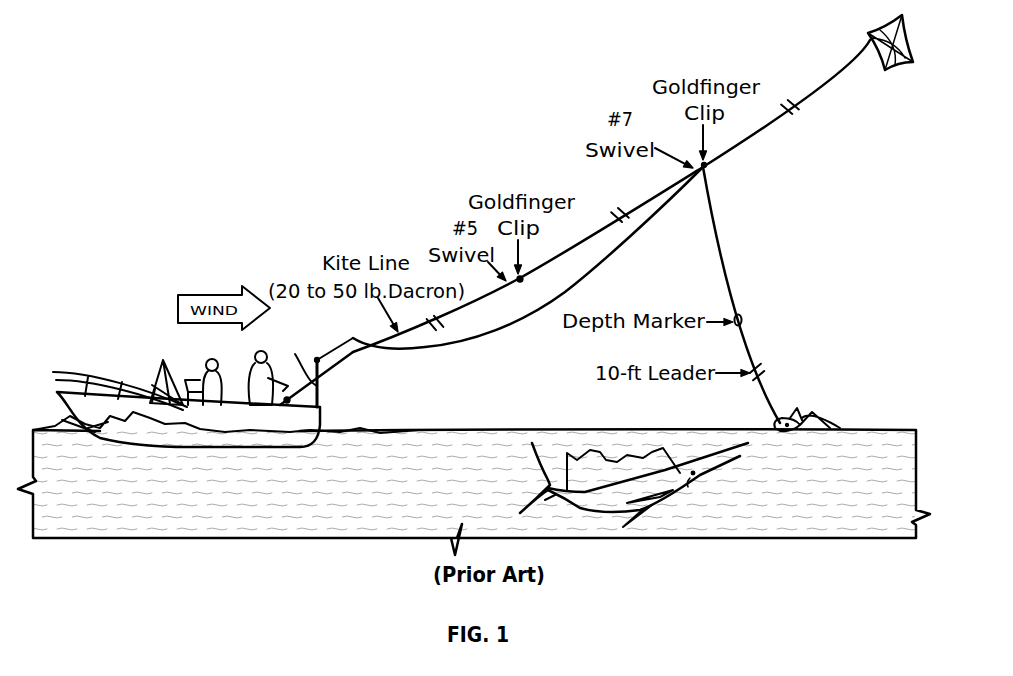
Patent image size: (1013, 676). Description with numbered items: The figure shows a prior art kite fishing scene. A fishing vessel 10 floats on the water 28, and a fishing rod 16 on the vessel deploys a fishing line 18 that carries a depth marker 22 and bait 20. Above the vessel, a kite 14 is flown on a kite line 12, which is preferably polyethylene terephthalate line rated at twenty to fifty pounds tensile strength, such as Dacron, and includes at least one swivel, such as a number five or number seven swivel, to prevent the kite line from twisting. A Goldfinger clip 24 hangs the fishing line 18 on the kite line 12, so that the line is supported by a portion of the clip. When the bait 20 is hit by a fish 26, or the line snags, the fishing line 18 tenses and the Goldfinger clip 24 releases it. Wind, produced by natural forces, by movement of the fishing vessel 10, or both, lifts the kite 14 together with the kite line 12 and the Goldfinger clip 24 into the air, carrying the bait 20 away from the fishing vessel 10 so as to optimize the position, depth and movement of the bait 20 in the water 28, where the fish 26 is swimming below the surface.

The fishing vessel 10 is at (60, 400).
The kite line 12 is at (835, 76).
The kite 14 is at (888, 68).
The fishing rod 16 is at (316, 364).
The fishing line 18 is at (528, 316).
The bait 20 is at (790, 416).
The depth marker 22 is at (744, 318).
The Goldfinger clip 24 is at (708, 168).
The fish 26 is at (700, 490).
The water 28 is at (867, 498).